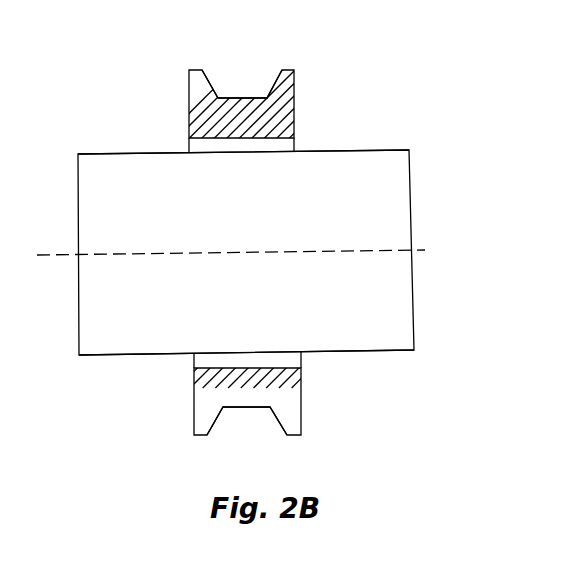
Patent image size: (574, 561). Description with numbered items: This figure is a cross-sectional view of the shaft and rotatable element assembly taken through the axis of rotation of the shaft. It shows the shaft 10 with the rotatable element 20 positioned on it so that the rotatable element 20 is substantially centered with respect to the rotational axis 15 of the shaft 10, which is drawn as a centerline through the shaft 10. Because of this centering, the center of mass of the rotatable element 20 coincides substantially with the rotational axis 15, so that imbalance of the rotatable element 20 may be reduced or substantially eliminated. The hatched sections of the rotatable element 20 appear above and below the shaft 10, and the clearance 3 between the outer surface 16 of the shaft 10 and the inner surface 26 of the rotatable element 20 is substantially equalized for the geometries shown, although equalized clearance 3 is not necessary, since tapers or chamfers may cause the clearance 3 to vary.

The rotatable element 20 is at (173, 49).
The shaft 10 is at (125, 178).
The rotational axis 15 is at (55, 257).
The outer surface 16 is at (353, 150).
The clearance 3 is at (200, 143).
The inner surface 26 is at (228, 134).